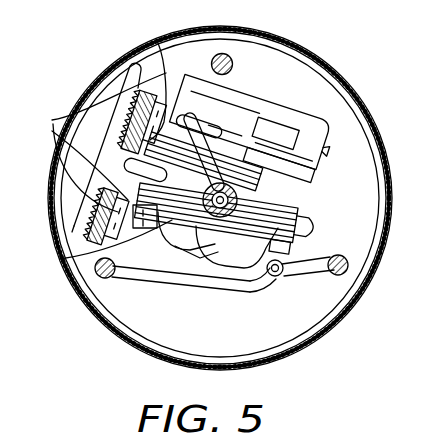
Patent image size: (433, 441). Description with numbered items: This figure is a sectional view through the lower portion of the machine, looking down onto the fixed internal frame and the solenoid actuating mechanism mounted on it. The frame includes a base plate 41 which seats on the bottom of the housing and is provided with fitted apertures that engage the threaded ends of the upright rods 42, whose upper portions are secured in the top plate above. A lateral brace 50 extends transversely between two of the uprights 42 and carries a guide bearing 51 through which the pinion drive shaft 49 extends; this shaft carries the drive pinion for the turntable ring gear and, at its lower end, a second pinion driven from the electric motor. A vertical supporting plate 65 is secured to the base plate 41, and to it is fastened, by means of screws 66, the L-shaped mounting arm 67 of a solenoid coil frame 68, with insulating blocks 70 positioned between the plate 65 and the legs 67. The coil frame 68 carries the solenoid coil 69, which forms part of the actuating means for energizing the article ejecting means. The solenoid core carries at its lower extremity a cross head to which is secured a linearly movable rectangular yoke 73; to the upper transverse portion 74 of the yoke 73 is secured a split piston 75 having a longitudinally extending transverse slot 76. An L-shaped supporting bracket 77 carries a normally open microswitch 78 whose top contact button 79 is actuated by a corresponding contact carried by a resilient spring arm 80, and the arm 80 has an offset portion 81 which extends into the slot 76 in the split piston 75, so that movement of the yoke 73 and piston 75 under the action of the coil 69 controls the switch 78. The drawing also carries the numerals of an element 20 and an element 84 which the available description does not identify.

The housing 20 is at (356, 96).
The base plate 41 is at (371, 151).
The upright rods 42 is at (234, 67).
The pinion drive shaft 49 is at (282, 278).
The lateral brace 50 is at (146, 284).
The guide bearing 51 is at (262, 283).
The vertical supporting plate 65 is at (101, 142).
The screws 66 is at (180, 84).
The L-shaped mounting arm 67 is at (158, 43).
The solenoid coil frame 68 is at (120, 160).
The solenoid coil 69 is at (303, 207).
The insulating blocks 70 is at (129, 65).
The rectangular yoke 73 is at (321, 234).
The upper transverse portion 74 is at (291, 246).
The split piston 75 is at (236, 232).
The transverse slot 76 is at (206, 248).
The L-shaped supporting bracket 77 is at (124, 98).
The microswitch 78 is at (265, 122).
The top contact button 79 is at (301, 118).
The resilient spring arm 80 is at (215, 122).
The offset portion 81 is at (246, 120).
The housing block 84 is at (172, 238).